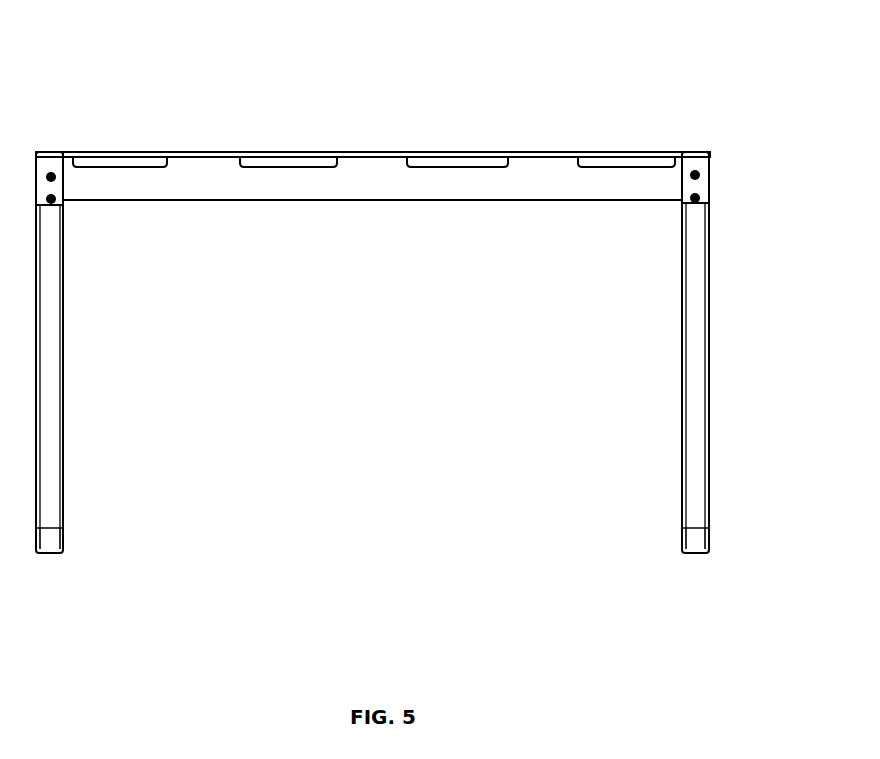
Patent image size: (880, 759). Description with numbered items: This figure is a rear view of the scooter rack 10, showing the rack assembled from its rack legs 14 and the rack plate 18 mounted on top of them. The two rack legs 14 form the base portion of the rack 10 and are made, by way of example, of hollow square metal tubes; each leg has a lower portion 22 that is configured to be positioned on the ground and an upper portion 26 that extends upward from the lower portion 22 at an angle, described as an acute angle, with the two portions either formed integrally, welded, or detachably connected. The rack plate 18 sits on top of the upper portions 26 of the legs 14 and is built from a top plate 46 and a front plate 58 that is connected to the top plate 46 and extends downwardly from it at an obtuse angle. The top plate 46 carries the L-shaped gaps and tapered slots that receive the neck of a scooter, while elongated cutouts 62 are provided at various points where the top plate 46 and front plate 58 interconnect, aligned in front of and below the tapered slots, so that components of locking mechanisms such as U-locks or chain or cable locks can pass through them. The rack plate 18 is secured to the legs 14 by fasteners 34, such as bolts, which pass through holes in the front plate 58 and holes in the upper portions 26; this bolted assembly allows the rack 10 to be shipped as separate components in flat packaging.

The scooter rack 10 is at (427, 133).
The rack legs 14 is at (707, 363).
The rack plate 18 is at (563, 148).
The lower portion 22 is at (708, 540).
The upper portion 26 is at (710, 447).
The fasteners 34 is at (713, 168).
The top plate 46 is at (280, 152).
The front plate 58 is at (377, 185).
The elongated cutouts 62 is at (482, 158).